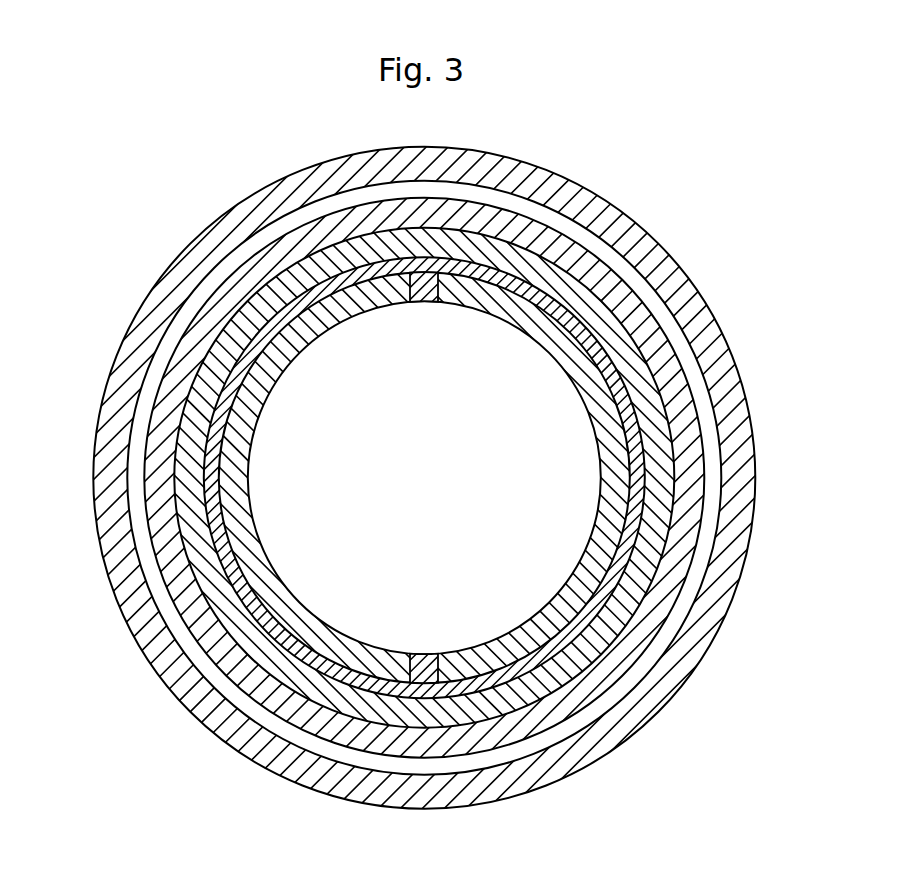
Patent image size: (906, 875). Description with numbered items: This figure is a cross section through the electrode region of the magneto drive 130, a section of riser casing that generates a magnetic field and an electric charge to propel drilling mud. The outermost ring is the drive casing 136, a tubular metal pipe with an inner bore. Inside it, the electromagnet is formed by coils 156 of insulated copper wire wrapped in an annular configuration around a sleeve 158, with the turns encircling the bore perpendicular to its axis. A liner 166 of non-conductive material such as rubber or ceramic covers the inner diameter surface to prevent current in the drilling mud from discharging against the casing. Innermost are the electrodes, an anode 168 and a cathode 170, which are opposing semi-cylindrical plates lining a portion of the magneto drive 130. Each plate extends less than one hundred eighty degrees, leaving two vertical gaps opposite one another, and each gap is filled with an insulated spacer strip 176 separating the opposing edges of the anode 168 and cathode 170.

The magneto drive 130 is at (182, 156).
The drive casing 136 is at (188, 246).
The coils 156 is at (215, 318).
The sleeve 158 is at (203, 390).
The liner 166 is at (210, 440).
The anode 168 is at (606, 398).
The cathode 170 is at (240, 518).
The insulated spacer strip 176 is at (422, 283).